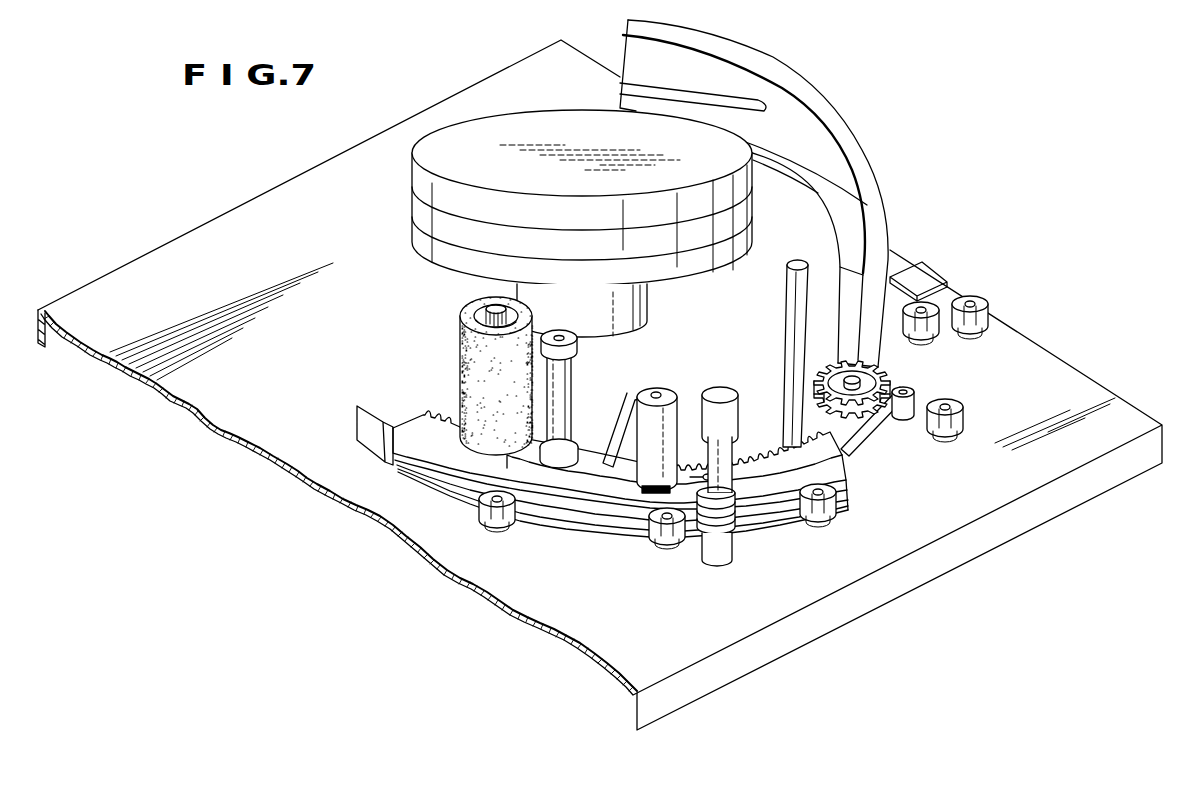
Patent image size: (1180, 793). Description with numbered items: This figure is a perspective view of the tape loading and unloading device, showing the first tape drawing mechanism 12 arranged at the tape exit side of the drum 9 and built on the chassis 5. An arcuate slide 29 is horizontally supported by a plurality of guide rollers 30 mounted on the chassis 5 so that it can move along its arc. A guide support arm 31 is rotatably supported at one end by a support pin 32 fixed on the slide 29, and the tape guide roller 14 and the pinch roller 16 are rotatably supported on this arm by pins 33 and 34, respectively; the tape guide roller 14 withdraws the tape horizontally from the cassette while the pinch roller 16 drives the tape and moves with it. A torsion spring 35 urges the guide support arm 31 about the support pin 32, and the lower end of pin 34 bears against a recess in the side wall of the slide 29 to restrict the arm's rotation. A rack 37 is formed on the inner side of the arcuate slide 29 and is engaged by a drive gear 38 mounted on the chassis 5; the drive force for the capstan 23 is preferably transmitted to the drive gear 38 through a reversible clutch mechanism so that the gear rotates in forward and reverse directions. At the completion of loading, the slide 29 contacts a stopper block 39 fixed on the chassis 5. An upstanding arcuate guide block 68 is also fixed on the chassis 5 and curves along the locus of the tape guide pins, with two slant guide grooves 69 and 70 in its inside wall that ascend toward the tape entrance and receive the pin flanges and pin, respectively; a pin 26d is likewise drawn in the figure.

The chassis 5 is at (753, 655).
The drum 9 is at (520, 130).
The first tape drawing mechanism 12 is at (580, 537).
The tape guide roller 14 is at (563, 390).
The pinch roller 16 is at (465, 380).
The capstan 23 is at (790, 333).
The pin 26d is at (720, 393).
The arcuate slide 29 is at (773, 472).
The guide rollers 30 is at (500, 525).
The guide support arm 31 is at (588, 468).
The support pin 32 is at (657, 391).
The pin 33 is at (572, 341).
The pin 34 is at (476, 311).
The torsion spring 35 is at (705, 475).
The rack 37 is at (834, 431).
The drive gear 38 is at (876, 378).
The stopper block 39 is at (927, 279).
The arcuate guide block 68 is at (762, 189).
The slant guide groove 69 is at (815, 174).
The slant guide groove 70 is at (735, 100).